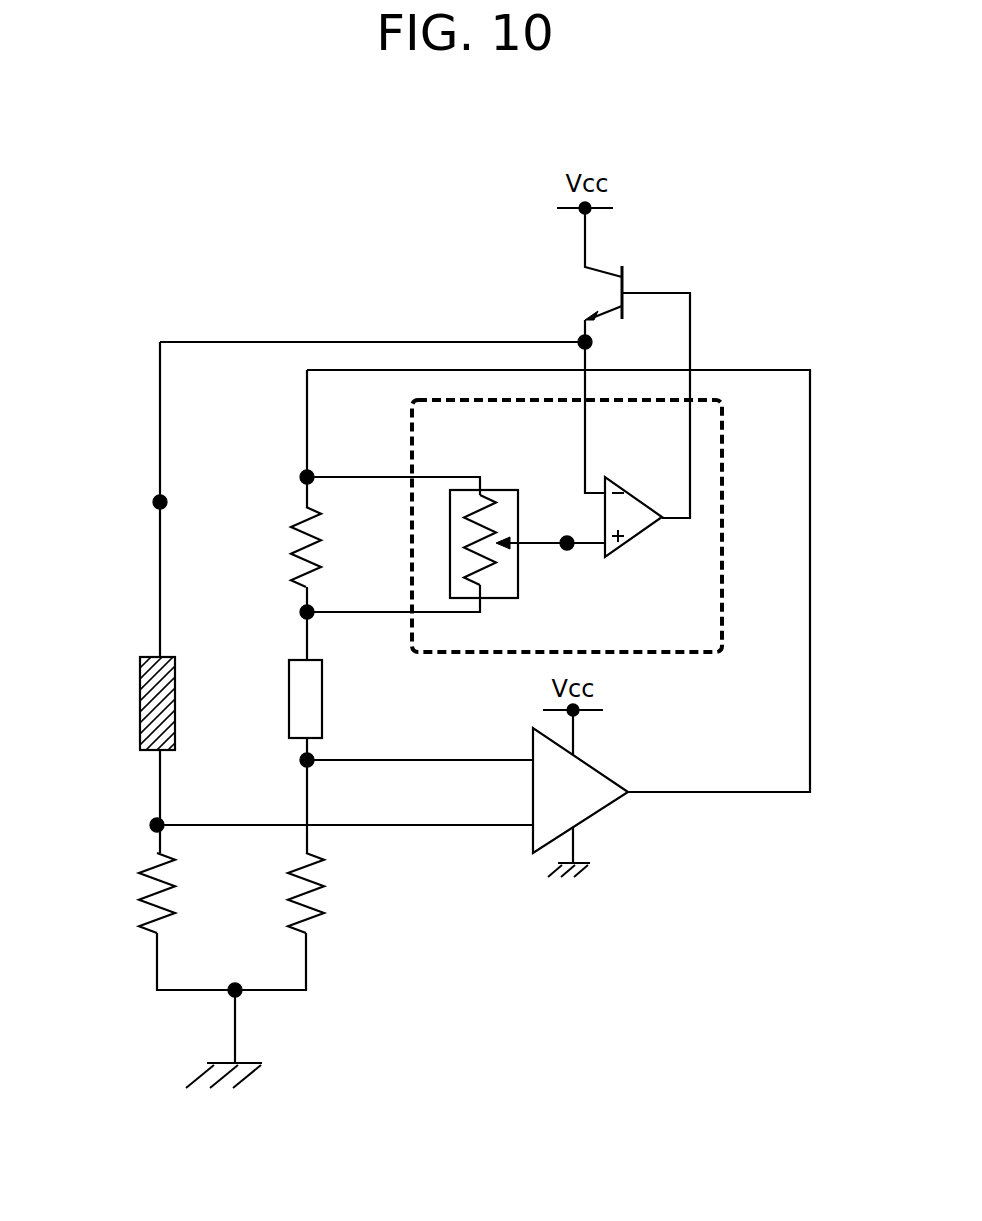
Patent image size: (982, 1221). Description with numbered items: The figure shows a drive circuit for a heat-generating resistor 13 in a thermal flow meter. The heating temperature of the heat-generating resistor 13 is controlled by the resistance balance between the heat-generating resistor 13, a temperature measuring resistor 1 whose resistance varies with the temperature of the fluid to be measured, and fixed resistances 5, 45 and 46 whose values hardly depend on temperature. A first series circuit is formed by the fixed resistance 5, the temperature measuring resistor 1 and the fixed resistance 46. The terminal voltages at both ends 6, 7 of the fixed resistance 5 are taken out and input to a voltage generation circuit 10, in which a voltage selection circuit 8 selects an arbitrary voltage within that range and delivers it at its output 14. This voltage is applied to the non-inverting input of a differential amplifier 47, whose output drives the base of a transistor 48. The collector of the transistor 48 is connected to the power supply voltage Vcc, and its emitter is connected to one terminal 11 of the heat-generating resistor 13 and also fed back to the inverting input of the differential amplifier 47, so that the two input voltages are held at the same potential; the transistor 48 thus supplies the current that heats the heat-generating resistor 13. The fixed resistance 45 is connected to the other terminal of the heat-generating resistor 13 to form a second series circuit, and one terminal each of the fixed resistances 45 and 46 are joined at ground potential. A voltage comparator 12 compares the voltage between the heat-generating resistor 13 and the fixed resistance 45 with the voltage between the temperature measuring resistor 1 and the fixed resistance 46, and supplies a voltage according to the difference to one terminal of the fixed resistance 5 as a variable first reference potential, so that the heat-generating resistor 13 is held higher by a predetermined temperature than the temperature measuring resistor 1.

The temperature measuring resistor 1 is at (322, 668).
The fixed resistance 5 is at (298, 540).
The end of the fixed resistance 6 is at (300, 474).
The end of the fixed resistance 7 is at (300, 610).
The voltage selection circuit 8 is at (522, 573).
The voltage generation circuit 10 is at (670, 653).
The terminal of the heat-generating resistor 11 is at (154, 496).
The voltage comparator 12 is at (583, 798).
The heat-generating resistor 13 is at (136, 690).
The output of the voltage selection circuit 14 is at (562, 537).
The fixed resistance 45 is at (142, 912).
The fixed resistance 46 is at (318, 900).
The differential amplifier 47 is at (638, 525).
The transistor 48 is at (630, 268).